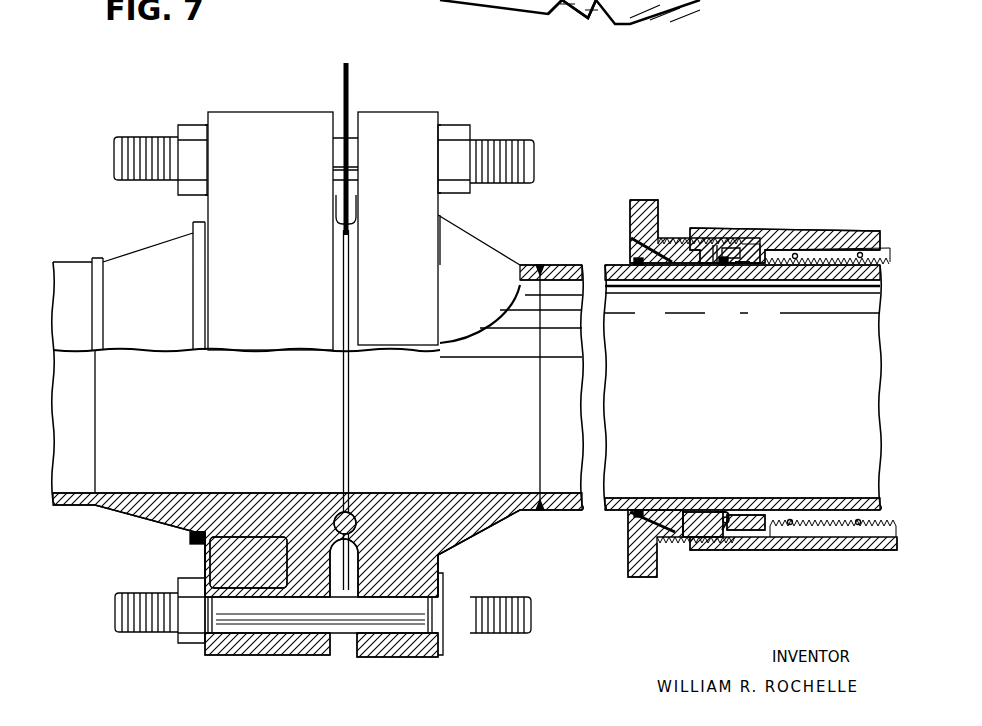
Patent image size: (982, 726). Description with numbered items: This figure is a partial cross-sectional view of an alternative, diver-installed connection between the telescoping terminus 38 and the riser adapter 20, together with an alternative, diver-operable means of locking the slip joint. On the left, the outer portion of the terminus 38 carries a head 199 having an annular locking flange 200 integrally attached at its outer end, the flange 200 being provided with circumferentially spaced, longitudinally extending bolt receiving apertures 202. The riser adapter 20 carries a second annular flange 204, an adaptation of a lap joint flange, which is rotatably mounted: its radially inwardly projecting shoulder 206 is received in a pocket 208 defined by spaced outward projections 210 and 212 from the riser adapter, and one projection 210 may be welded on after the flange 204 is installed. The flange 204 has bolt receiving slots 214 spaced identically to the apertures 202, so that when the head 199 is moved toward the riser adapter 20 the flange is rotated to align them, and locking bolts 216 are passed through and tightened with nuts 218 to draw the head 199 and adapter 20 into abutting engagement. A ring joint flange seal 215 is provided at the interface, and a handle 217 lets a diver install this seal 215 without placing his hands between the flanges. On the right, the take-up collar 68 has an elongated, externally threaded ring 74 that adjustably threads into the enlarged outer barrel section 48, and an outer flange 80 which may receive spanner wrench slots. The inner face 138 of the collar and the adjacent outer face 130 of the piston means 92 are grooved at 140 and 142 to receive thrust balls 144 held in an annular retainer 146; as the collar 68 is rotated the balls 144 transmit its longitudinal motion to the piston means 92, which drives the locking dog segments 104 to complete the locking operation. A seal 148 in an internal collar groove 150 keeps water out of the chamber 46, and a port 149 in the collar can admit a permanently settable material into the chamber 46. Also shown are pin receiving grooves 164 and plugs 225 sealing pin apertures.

The riser adapter 20 is at (114, 246).
The terminus 38 is at (542, 513).
The chamber 46 is at (879, 510).
The enlarged outer barrel section 48 is at (806, 230).
The collar 68 is at (677, 198).
The ring 74 is at (691, 527).
The outer flange 80 is at (633, 580).
The piston means 92 is at (742, 532).
The locking dog segments 104 is at (752, 537).
The outer face 130 is at (740, 268).
The inner face 138 is at (719, 270).
The annular groove 140 is at (713, 244).
The annular groove 142 is at (730, 250).
The thrust balls 144 is at (719, 514).
The annular retainer 146 is at (724, 517).
The seal 148 is at (638, 511).
The port 149 is at (631, 240).
The internal collar groove 150 is at (640, 270).
The pin receiving grooves 164 is at (596, 46).
The head 199 is at (488, 244).
The annular locking flange 200 is at (419, 566).
The bolt receiving apertures 202 is at (414, 658).
The second annular flange 204 is at (150, 626).
The shoulder 206 is at (258, 544).
The pocket 208 is at (189, 540).
The outward projection 210 is at (200, 564).
The outward projection 212 is at (321, 615).
The bolt receiving slots 214 is at (262, 642).
The ring joint flange seal 215 is at (351, 511).
The locking bolts 216 is at (516, 148).
The handle 217 is at (350, 102).
The nuts 218 is at (456, 134).
The plugs 225 is at (506, 12).